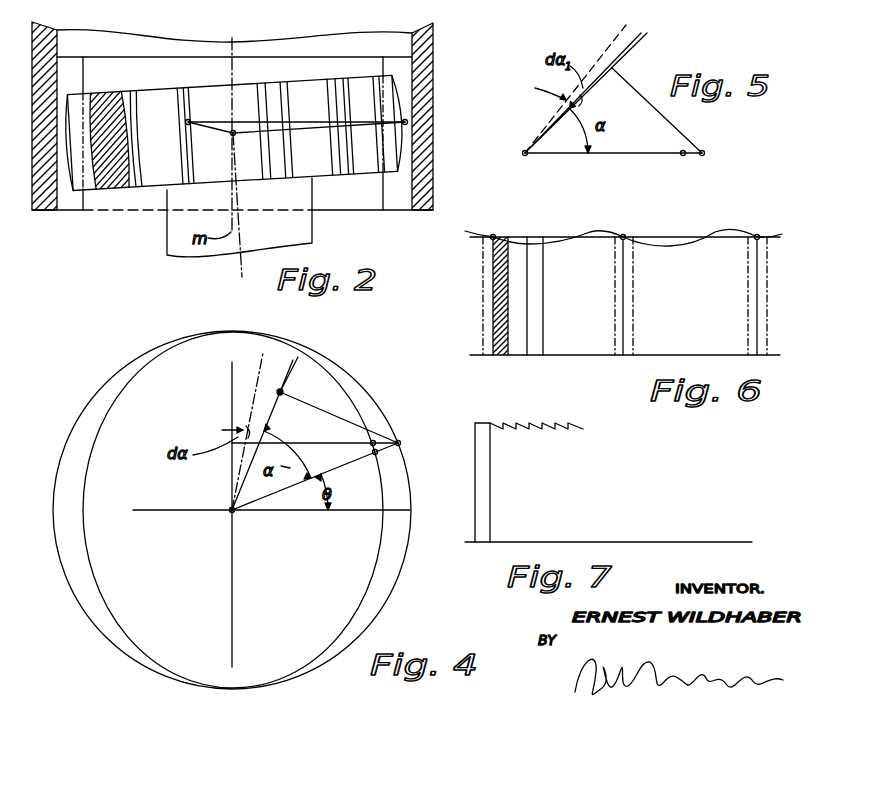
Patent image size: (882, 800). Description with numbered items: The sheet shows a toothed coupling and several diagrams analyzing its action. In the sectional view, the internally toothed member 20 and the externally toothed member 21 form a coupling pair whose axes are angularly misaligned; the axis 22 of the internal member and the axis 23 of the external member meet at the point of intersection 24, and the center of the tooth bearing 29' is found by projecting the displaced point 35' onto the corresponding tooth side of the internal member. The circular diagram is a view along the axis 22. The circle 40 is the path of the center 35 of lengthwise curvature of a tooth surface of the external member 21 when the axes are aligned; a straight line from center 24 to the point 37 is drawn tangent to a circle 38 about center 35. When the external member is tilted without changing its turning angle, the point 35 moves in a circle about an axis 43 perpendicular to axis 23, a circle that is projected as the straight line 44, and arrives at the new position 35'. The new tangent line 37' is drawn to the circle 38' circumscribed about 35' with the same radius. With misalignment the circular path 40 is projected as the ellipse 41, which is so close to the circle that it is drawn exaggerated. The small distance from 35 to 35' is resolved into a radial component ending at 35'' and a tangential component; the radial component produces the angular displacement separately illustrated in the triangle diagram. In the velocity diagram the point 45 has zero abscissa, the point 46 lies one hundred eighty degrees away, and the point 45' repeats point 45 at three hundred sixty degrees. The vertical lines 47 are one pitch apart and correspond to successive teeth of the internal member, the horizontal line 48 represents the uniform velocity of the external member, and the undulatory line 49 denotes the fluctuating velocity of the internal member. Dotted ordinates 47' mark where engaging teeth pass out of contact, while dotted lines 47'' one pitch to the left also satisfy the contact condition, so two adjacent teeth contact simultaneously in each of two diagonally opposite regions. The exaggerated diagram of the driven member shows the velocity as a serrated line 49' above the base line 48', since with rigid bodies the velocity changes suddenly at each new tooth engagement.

In FIG. 2, the internally toothed member 20 is at (424, 100).
In FIG. 2, the externally toothed member 21 is at (166, 177).
In FIG. 2, the axis of the internal member 22 is at (237, 78).
In FIG. 4, the axis of the internal member 22 is at (231, 513).
In FIG. 2, the axis of the external member 23 is at (242, 237).
In FIG. 4, the axis of the external member 23 is at (295, 512).
In FIG. 2, the point of intersection of the axes 24 is at (231, 130).
In FIG. 5, the point of intersection of the axes 24 is at (525, 157).
In FIG. 4, the point of intersection of the axes 24 is at (232, 510).
In FIG. 2, the center of the tooth bearing 29' is at (168, 133).
In FIG. 5, the center of lengthwise curvature of a tooth surface 35 is at (631, 142).
In FIG. 4, the center of lengthwise curvature of a tooth surface 35 is at (414, 435).
In FIG. 2, the new position of the center 35' is at (327, 127).
In FIG. 4, the new position of the center 35' is at (315, 437).
In FIG. 5, the component point 35'' is at (697, 168).
In FIG. 4, the component point 35'' is at (362, 469).
In FIG. 4, the tangent point 37 is at (337, 409).
In FIG. 4, the new tangent line 37' is at (246, 424).
In FIG. 4, the circle about center 35 38 is at (267, 435).
In FIG. 4, the circle about new center 35' 38' is at (280, 374).
In FIG. 4, the circle 40 is at (395, 585).
In FIG. 4, the ellipse 41 is at (83, 542).
In FIG. 4, the axis perpendicular to axis 23 43 is at (231, 400).
In FIG. 4, the projected straight line 44 is at (303, 448).
In FIG. 6, the point of zero abscissa 45 is at (507, 294).
In FIG. 6, the repetition of point 45 45' is at (773, 283).
In FIG. 6, the point 180° from point 45 46 is at (624, 235).
In FIG. 6, the vertical lines 47 is at (597, 296).
In FIG. 7, the vertical lines 47 is at (501, 482).
In FIG. 6, the dotted line ordinates 47' is at (653, 310).
In FIG. 6, the dotted lines one pitch to the left 47'' is at (595, 296).
In FIG. 6, the horizontal line 48 is at (623, 228).
In FIG. 6, the base line of velocity diagram 48' is at (720, 342).
In FIG. 7, the base line of velocity diagram 48' is at (608, 528).
In FIG. 6, the undulatory line 49 is at (679, 258).
In FIG. 7, the serrated line 49' is at (550, 418).